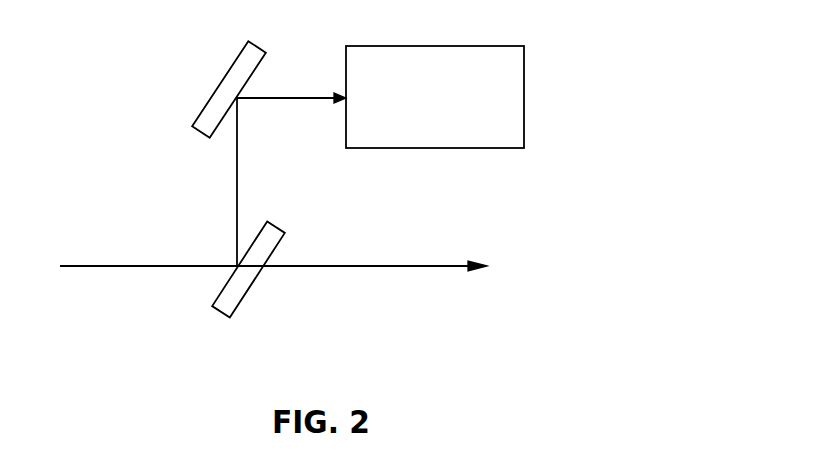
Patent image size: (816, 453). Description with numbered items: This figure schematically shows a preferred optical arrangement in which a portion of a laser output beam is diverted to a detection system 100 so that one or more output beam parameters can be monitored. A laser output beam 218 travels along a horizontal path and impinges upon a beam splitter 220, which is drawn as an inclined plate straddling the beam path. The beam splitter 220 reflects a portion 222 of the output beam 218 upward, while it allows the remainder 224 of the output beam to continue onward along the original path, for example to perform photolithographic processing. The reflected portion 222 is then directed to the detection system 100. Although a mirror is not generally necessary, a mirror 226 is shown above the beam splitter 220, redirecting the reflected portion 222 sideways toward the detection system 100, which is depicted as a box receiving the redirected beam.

The detection system 100 is at (503, 45).
The laser output beam 218 is at (117, 263).
The beam splitter 220 is at (272, 220).
The reflected portion 222 is at (235, 181).
The remainder of the output beam 224 is at (390, 262).
The mirror 226 is at (230, 67).